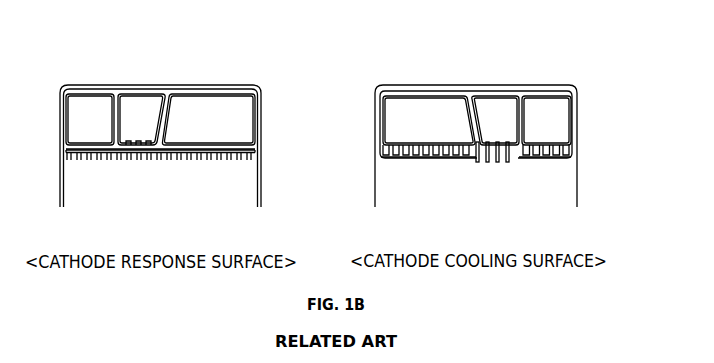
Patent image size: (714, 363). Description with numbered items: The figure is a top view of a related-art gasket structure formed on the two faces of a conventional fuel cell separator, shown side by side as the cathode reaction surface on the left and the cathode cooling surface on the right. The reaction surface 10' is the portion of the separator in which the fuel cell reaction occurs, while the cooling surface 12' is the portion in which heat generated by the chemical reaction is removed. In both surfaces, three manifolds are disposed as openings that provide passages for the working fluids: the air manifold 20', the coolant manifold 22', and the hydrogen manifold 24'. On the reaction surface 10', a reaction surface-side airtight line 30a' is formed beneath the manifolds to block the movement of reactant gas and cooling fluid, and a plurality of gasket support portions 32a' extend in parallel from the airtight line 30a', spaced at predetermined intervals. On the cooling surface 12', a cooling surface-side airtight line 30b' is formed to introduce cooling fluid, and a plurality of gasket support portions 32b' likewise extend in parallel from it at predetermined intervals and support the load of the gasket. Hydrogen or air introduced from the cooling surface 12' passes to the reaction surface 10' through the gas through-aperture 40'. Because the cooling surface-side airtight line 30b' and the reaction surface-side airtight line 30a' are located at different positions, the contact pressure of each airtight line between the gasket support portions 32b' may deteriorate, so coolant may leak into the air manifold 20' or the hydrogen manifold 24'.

The reaction surface 10' is at (161, 167).
The cooling surface 12' is at (481, 168).
The air manifold 20' is at (318, 92).
The manifold 22' is at (318, 92).
The hydrogen manifold 24' is at (318, 92).
The reaction surface-side airtight line 30a' is at (192, 128).
The cooling surface-side airtight line 30b' is at (491, 182).
The gasket support portions 32a' is at (159, 191).
The gasket support portions 32b' is at (494, 121).
The gas through-aperture 40' is at (318, 173).